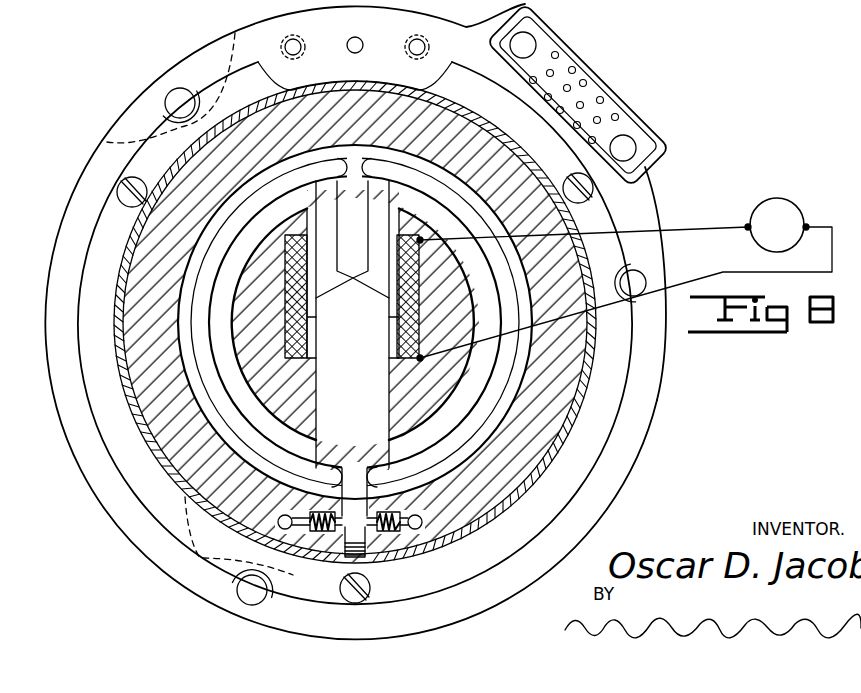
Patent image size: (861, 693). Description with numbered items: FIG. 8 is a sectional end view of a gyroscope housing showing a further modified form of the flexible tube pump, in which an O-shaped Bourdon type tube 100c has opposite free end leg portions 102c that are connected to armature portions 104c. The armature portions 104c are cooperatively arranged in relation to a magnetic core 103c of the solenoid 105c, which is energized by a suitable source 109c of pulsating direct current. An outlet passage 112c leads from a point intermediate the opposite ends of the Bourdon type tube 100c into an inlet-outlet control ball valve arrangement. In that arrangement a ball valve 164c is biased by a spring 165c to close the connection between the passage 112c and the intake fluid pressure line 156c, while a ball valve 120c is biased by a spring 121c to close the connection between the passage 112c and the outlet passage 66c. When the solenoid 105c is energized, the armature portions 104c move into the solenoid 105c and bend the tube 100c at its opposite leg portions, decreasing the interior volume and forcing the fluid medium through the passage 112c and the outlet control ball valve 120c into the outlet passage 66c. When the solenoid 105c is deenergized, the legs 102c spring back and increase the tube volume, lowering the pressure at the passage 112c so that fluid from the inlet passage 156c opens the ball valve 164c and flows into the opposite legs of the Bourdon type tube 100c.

The Bourdon type tube 100c is at (200, 262).
The free end leg portions 102c is at (374, 155).
The magnetic core 103c is at (377, 419).
The armature portions 104c is at (378, 270).
The solenoid 105c is at (406, 332).
The source of pulsating direct current 109c is at (779, 198).
The outlet passage 112c is at (357, 500).
The ball valve 120c is at (372, 533).
The spring 121c is at (393, 533).
The intake fluid pressure line 156c is at (280, 528).
The ball valve 164c is at (303, 533).
The spring 165c is at (328, 533).
The outlet passage 66c is at (421, 528).